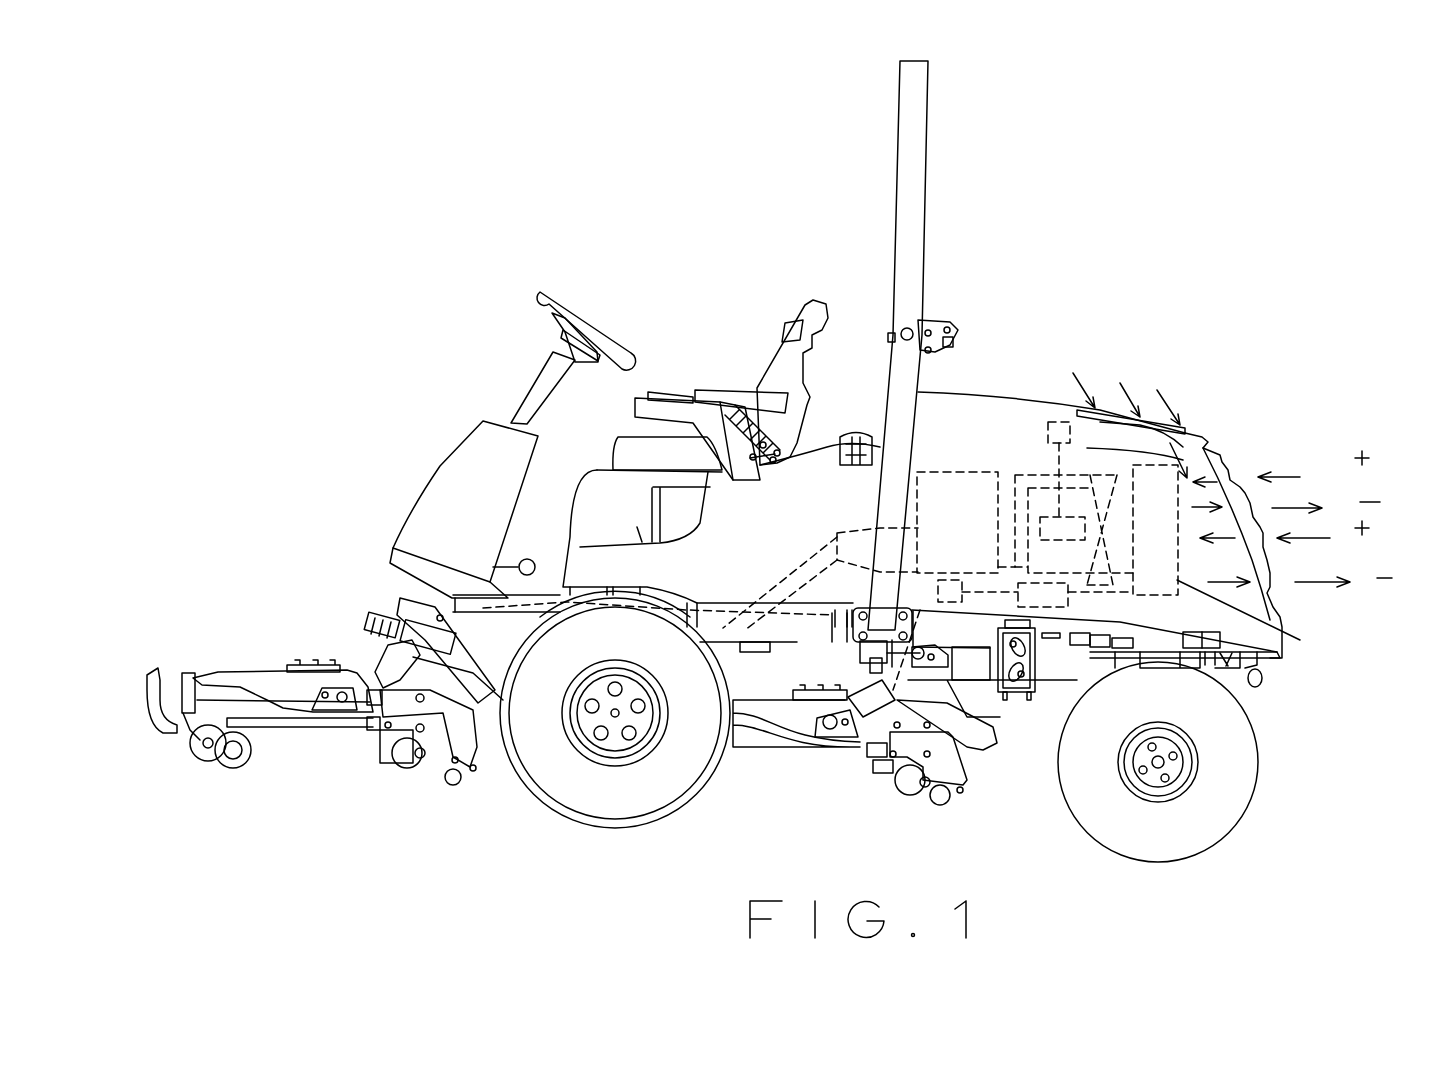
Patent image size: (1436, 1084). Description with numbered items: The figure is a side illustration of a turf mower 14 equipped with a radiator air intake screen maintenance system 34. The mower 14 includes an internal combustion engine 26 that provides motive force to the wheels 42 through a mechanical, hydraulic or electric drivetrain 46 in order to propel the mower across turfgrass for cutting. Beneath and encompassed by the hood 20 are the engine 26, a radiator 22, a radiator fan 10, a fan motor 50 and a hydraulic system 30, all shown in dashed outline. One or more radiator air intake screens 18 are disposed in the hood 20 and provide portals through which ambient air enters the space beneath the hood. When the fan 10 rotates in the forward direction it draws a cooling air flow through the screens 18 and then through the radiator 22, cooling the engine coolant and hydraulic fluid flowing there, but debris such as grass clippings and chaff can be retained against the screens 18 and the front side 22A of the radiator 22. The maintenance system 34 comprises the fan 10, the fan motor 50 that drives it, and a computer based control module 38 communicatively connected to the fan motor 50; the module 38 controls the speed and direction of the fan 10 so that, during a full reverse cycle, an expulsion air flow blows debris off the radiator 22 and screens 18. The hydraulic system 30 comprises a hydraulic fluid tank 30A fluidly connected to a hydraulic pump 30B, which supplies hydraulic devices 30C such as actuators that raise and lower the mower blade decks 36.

The turf mower 14 is at (988, 205).
The hood 20 is at (940, 392).
The radiator air intake screen 18 is at (1185, 435).
The radiator 22 is at (1155, 547).
The front side of the radiator 22A is at (1300, 640).
The radiator air intake screen maintenance system 34 is at (1092, 431).
The control module 38 is at (1058, 420).
The radiator fan 10 is at (1102, 480).
The fan motor 50 is at (1055, 528).
The internal combustion engine 26 is at (947, 502).
The drivetrain 46 is at (852, 547).
The wheels 42 is at (590, 788).
The hydraulic system 30 is at (599, 714).
The hydraulic fluid tank 30A is at (1068, 602).
The hydraulic pump 30B is at (953, 593).
The hydraulic device 30C is at (403, 617).
The mower blade deck 36 is at (285, 692).